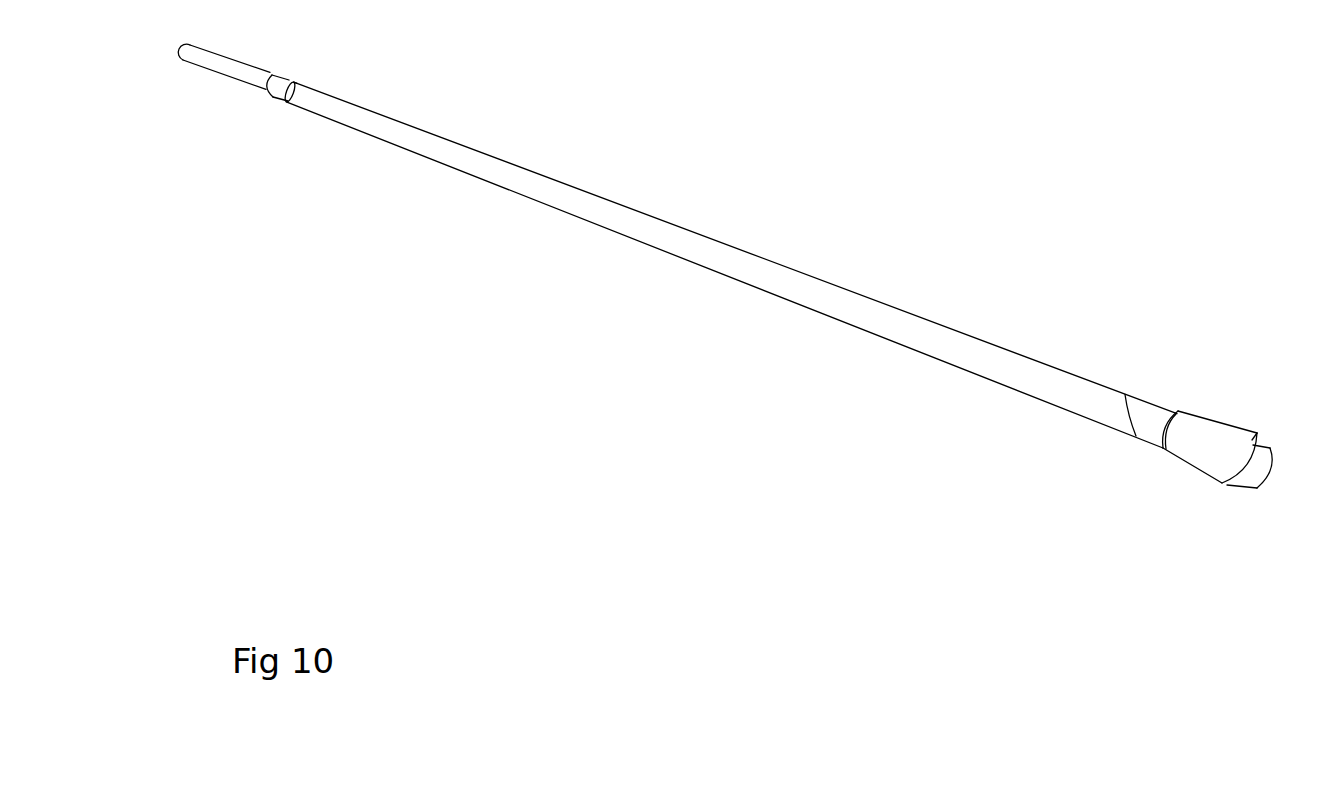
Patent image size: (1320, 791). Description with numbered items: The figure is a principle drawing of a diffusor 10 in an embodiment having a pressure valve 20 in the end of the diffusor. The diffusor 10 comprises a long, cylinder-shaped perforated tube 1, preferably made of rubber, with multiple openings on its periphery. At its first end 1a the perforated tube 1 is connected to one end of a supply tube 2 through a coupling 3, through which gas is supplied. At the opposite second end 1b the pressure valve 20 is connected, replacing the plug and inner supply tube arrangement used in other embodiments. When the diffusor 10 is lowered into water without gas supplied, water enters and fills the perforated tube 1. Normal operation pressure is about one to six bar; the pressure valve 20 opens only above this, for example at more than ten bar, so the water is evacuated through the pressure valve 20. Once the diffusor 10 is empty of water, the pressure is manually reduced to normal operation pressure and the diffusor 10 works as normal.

The diffusor 10 is at (313, 160).
The perforated tube 1 is at (632, 215).
The first end 1a is at (265, 108).
The second end 1b is at (1133, 460).
The supply tube 2 is at (233, 62).
The coupling 3 is at (287, 76).
The pressure valve 20 is at (1180, 427).